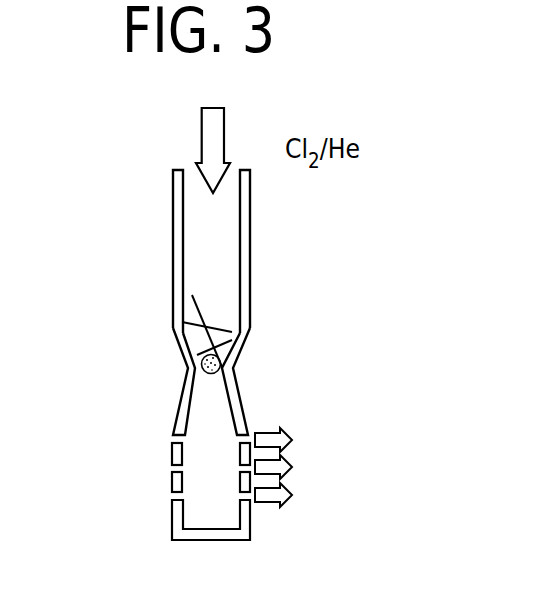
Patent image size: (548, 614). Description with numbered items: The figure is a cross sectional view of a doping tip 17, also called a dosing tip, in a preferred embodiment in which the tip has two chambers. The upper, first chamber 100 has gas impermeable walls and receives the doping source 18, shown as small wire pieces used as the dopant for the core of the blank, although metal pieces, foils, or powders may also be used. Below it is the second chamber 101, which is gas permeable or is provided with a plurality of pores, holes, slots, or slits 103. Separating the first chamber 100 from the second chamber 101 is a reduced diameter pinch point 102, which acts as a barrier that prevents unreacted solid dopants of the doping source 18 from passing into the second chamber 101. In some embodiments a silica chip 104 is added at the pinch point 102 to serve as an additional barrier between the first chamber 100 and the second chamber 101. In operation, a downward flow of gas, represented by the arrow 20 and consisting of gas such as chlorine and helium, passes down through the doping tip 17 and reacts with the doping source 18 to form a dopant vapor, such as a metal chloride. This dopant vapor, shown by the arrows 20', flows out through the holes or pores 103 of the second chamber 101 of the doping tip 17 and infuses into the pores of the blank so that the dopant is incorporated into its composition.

The downward flow of gas 20 is at (183, 150).
The doping tip 17 is at (172, 207).
The first chamber 100 is at (207, 302).
The doping source 18 is at (186, 322).
The silica chip 104 is at (222, 364).
The pinch point 102 is at (172, 381).
The second chamber 101 is at (262, 391).
The holes, slots, or slits 103 is at (173, 440).
The dopant vapor 20' is at (297, 467).